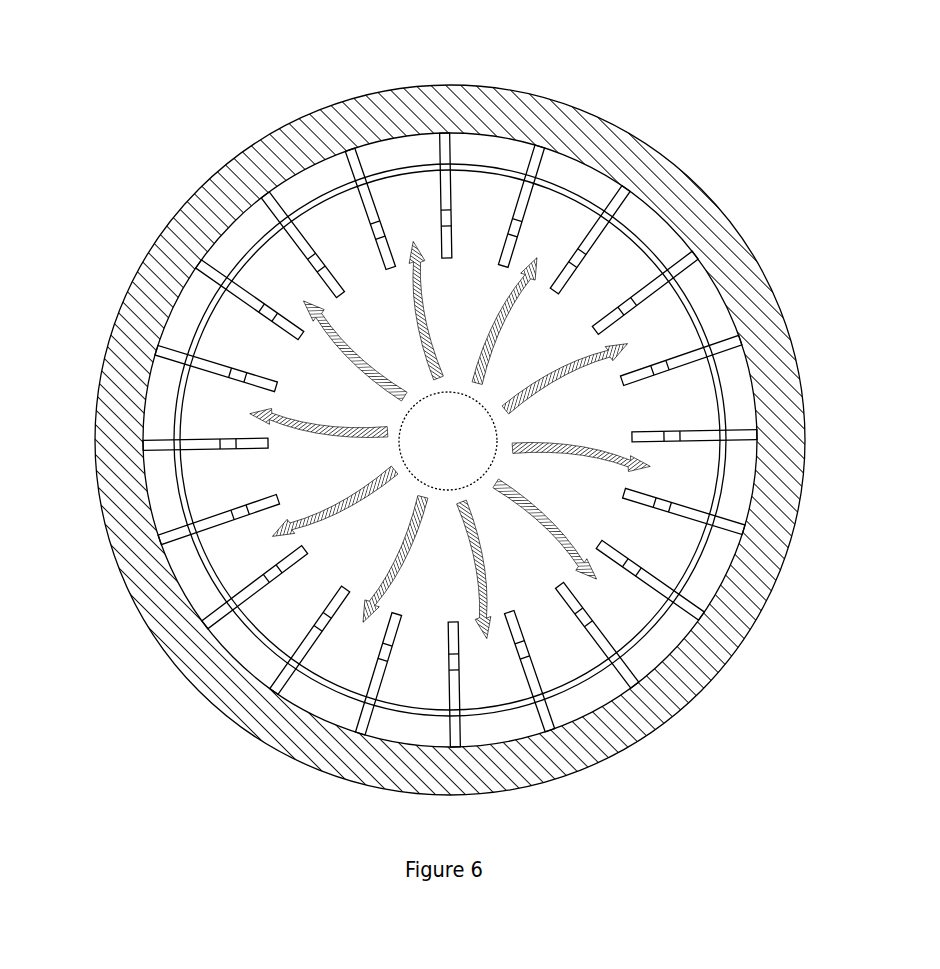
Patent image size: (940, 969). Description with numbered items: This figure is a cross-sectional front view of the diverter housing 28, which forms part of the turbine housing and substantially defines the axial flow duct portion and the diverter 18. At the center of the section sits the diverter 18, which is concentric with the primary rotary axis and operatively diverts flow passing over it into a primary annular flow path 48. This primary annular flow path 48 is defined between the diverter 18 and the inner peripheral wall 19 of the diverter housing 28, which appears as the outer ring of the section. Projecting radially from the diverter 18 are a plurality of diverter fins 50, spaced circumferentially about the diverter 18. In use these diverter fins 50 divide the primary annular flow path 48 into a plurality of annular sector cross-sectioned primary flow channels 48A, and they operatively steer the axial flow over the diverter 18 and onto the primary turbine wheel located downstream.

The diverter 18 is at (485, 432).
The inner peripheral wall 19 is at (450, 440).
The diverter housing 28 is at (667, 663).
The primary annular flow path 48 is at (450, 426).
The primary flow channels 48A is at (397, 216).
The diverter fins 50 is at (536, 165).